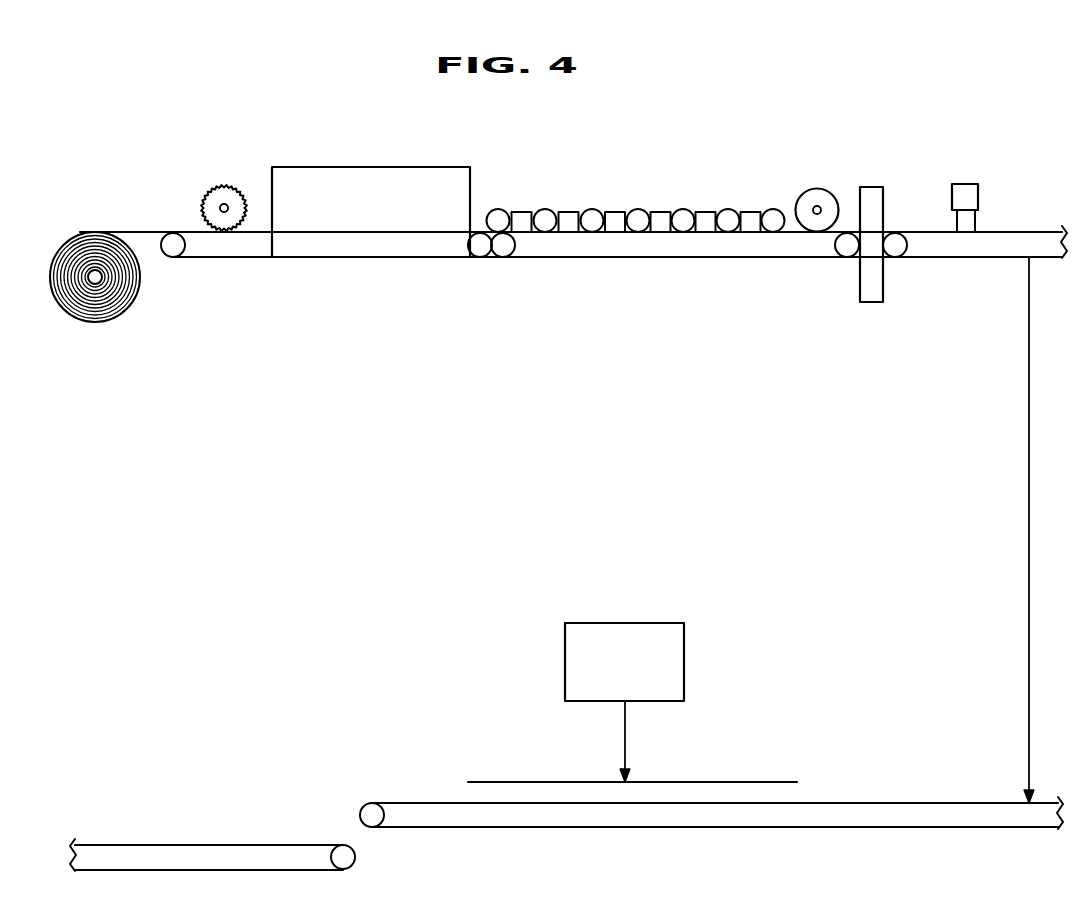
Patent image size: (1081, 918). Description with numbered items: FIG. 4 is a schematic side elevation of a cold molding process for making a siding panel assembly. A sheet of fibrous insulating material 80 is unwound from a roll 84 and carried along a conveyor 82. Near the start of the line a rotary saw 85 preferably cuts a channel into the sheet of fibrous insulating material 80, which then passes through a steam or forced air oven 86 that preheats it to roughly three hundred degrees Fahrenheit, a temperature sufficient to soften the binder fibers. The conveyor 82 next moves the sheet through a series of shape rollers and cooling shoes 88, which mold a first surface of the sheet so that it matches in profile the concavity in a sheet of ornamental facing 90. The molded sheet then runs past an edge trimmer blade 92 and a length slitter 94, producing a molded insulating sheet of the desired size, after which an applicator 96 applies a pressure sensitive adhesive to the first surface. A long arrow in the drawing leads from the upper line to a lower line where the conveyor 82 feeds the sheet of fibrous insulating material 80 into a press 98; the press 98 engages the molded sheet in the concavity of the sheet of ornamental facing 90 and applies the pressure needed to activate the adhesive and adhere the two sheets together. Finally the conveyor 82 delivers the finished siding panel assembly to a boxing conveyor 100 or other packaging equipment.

The sheet of fibrous insulating material 80 is at (143, 231).
The conveyor 82 is at (340, 258).
The roll 84 is at (140, 288).
The rotary saw 85 is at (232, 191).
The steam or forced air oven 86 is at (375, 183).
The shape rollers and cooling shoes 88 is at (493, 187).
The sheet of ornamental facing 90 is at (722, 781).
The edge trimmer blade 92 is at (818, 190).
The length slitter 94 is at (878, 287).
The applicator 96 is at (972, 198).
The press 98 is at (678, 655).
The boxing conveyor 100 is at (200, 871).